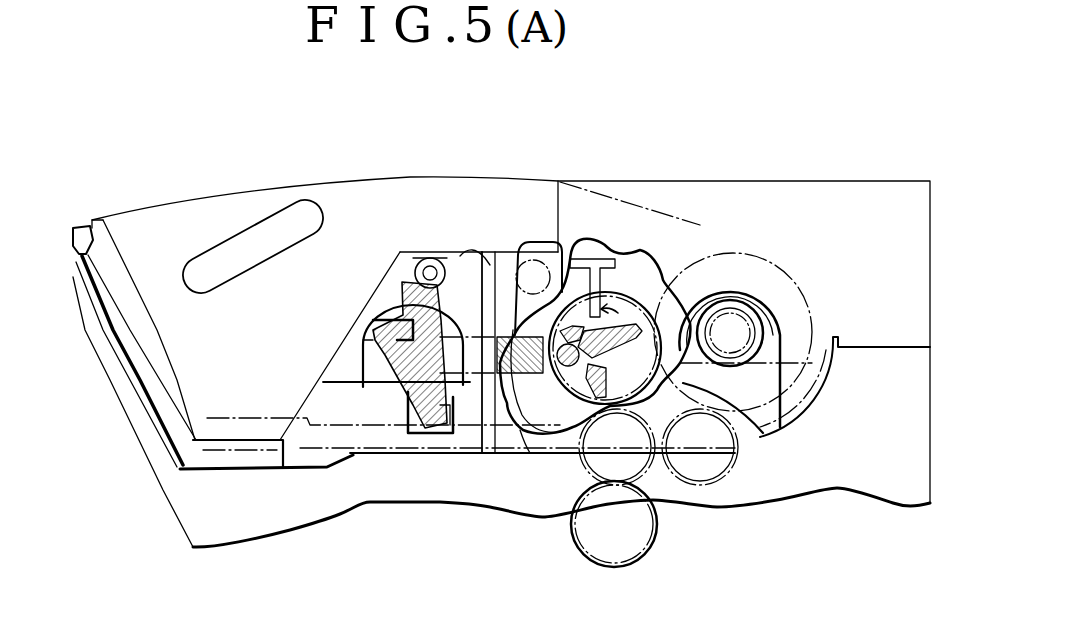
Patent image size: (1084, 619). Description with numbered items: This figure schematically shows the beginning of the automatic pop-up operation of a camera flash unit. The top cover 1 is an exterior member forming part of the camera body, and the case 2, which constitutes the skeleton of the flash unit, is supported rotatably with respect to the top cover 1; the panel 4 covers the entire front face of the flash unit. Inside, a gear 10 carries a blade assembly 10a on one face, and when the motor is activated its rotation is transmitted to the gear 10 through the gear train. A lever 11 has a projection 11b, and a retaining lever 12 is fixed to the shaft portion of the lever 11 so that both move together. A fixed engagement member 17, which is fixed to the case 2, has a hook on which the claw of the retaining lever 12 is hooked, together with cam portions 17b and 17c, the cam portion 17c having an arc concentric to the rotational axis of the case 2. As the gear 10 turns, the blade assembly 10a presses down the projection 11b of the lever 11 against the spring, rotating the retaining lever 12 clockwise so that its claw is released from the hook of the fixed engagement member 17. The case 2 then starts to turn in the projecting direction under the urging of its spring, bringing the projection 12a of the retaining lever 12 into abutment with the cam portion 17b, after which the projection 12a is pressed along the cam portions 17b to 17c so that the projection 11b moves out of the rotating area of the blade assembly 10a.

The top cover 1 is at (843, 217).
The case 2 is at (197, 222).
The panel 4 is at (77, 228).
The gear 10 is at (655, 295).
The blade assembly 10a is at (572, 452).
The lever 11 is at (499, 435).
The projection 11b is at (530, 430).
The retaining lever 12 is at (417, 272).
The projection 12a is at (430, 252).
The fixed engagement member 17 is at (410, 430).
The cam portion 17b is at (475, 255).
The cam portion 17c is at (458, 430).